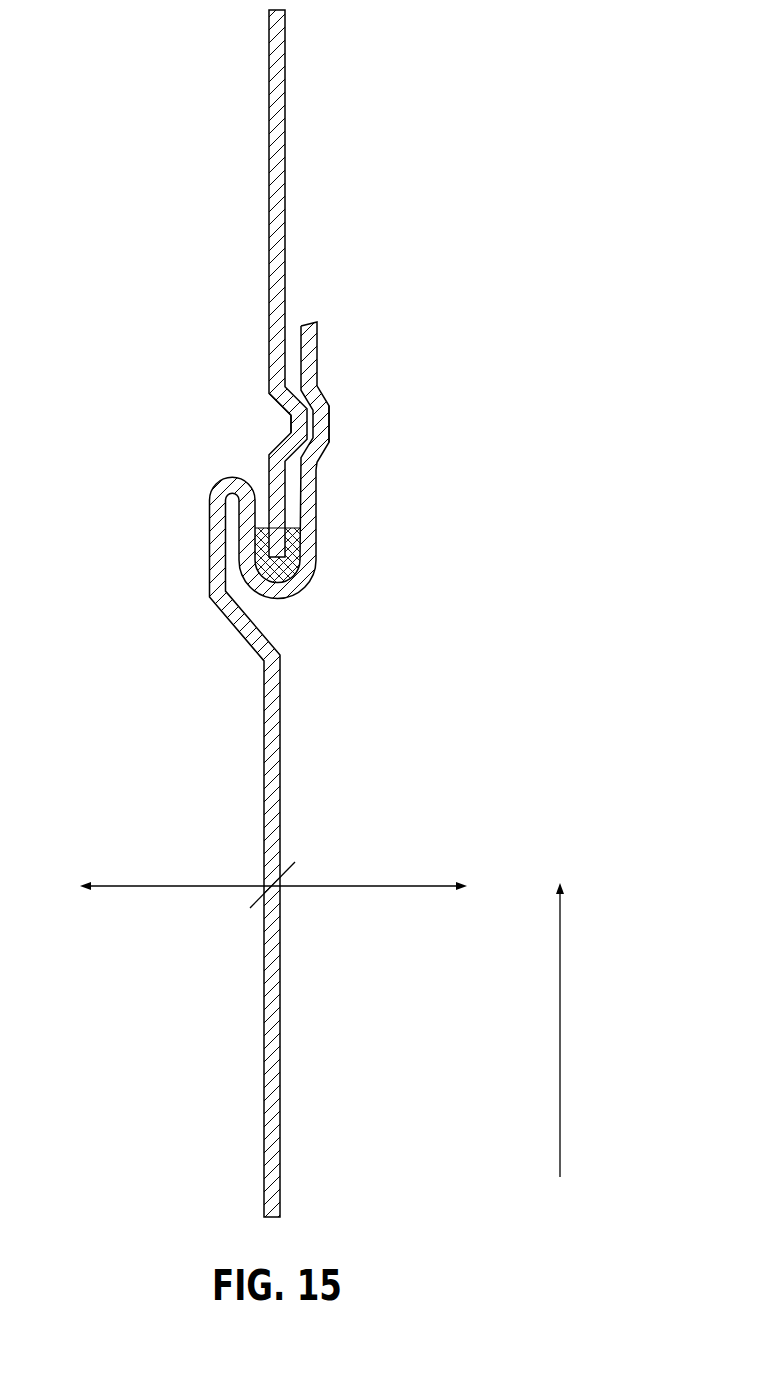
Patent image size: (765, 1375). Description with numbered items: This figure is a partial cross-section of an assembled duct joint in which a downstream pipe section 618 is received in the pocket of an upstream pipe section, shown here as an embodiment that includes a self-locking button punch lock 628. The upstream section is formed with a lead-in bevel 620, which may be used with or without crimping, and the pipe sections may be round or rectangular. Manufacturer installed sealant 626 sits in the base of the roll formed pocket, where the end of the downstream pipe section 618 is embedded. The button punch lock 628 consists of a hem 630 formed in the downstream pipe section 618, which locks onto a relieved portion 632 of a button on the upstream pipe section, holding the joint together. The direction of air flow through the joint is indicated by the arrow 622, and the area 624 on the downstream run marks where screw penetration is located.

The downstream pipe section 618 is at (251, 187).
The lead-in bevel 620 is at (328, 347).
The arrow 622 is at (560, 1045).
The area 624 is at (247, 961).
The manufacturer installed sealant 626 is at (185, 550).
The self-locking button punch lock 628 is at (264, 410).
The hem 630 is at (284, 428).
The relieved portion 632 is at (330, 434).